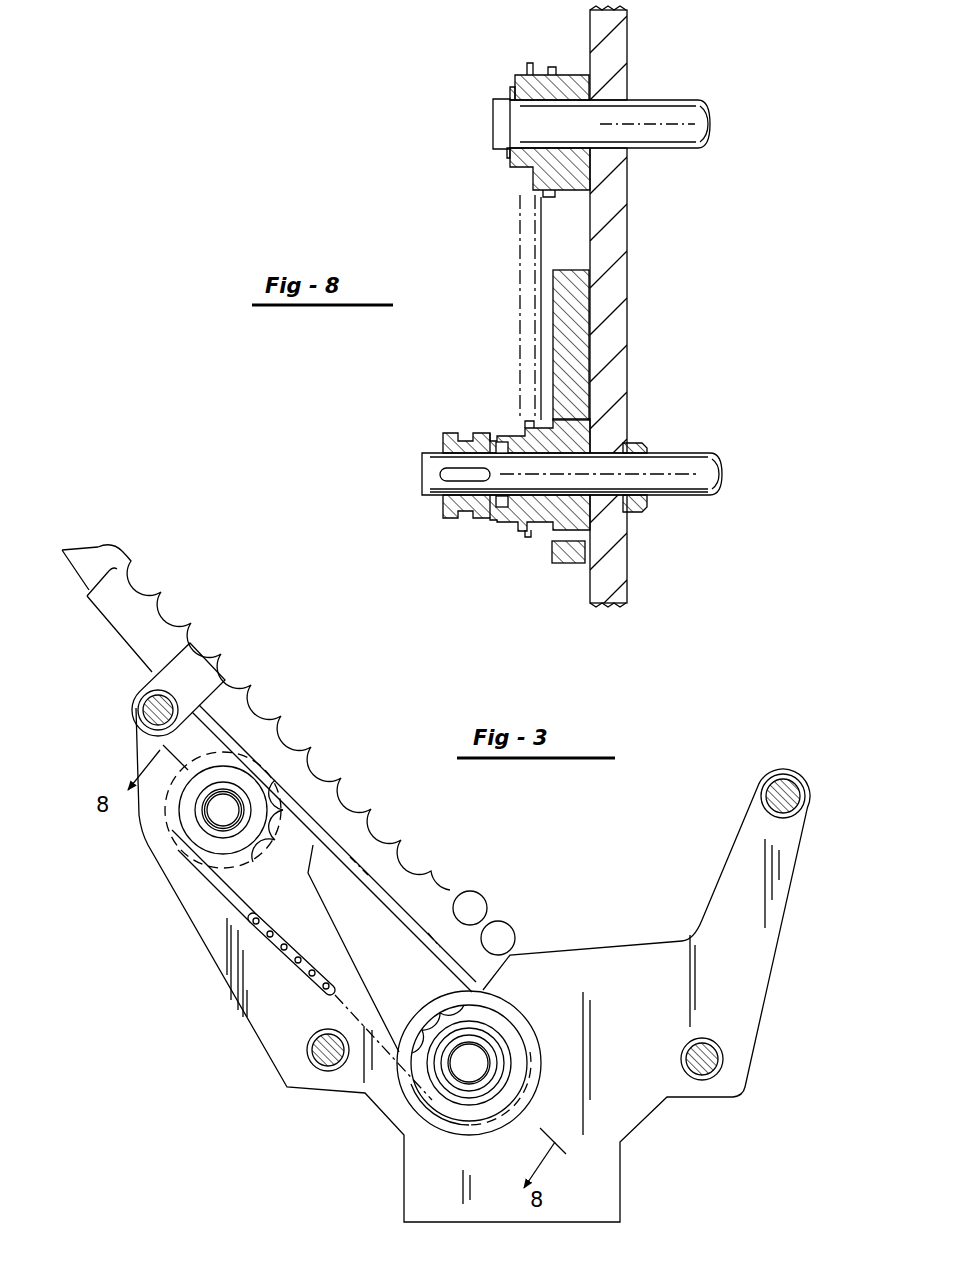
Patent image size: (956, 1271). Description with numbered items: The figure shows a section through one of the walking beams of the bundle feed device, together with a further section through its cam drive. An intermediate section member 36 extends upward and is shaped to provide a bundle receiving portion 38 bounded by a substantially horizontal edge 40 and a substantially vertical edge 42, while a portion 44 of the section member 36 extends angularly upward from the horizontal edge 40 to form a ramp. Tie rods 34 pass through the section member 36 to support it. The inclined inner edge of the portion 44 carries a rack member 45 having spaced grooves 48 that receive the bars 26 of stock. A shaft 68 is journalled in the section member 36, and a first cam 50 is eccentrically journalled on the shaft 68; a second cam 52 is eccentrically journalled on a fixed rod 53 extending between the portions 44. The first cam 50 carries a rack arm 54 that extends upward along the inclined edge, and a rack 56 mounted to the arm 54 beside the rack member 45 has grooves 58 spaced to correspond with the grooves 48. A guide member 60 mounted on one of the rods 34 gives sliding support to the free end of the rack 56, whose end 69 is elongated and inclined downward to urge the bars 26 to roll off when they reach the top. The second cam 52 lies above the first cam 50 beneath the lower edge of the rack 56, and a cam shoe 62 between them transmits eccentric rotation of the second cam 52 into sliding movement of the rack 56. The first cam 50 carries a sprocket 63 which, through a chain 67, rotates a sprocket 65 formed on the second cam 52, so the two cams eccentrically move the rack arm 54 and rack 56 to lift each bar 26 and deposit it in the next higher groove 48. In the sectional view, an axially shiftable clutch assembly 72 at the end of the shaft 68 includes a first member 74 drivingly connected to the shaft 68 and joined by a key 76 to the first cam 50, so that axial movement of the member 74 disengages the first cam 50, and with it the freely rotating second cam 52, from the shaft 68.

In FIG. 3, the bars of stock 26 is at (505, 923).
In FIG. 3, the tie rods 34 is at (138, 712).
In FIG. 8, the intermediate section members 36 is at (656, 258).
In FIG. 3, the intermediate section members 36 is at (490, 965).
In FIG. 3, the bundle receiving portion 38 is at (624, 846).
In FIG. 3, the horizontal edge 40 is at (632, 916).
In FIG. 3, the vertical edge 42 is at (733, 853).
In FIG. 3, the ramp portion 44 is at (212, 940).
In FIG. 3, the rack member 45 is at (160, 603).
In FIG. 3, the grooves 48 is at (343, 804).
In FIG. 8, the first cam 50 is at (553, 550).
In FIG. 3, the first cam 50 is at (509, 1111).
In FIG. 8, the second cam 52 is at (567, 80).
In FIG. 3, the second cam 52 is at (188, 865).
In FIG. 8, the fixed rod 53 is at (660, 100).
In FIG. 8, the rack arm 54 is at (583, 378).
In FIG. 3, the rack arm 54 is at (363, 945).
In FIG. 3, the rack 56 is at (130, 637).
In FIG. 3, the grooves 58 is at (269, 749).
In FIG. 3, the guide member 60 is at (203, 667).
In FIG. 3, the cam shoe 62 is at (295, 822).
In FIG. 8, the sprocket 63 is at (524, 422).
In FIG. 3, the sprocket 63 is at (447, 1020).
In FIG. 8, the sprocket 65 is at (525, 75).
In FIG. 3, the sprocket 65 is at (262, 850).
In FIG. 8, the chain 67 is at (518, 292).
In FIG. 3, the chain 67 is at (307, 975).
In FIG. 8, the shaft 68 is at (680, 468).
In FIG. 3, the end of rack 69 is at (114, 518).
In FIG. 8, the clutch assembly 72 is at (512, 520).
In FIG. 8, the first clutch member 74 is at (451, 518).
In FIG. 8, the key 76 is at (430, 475).